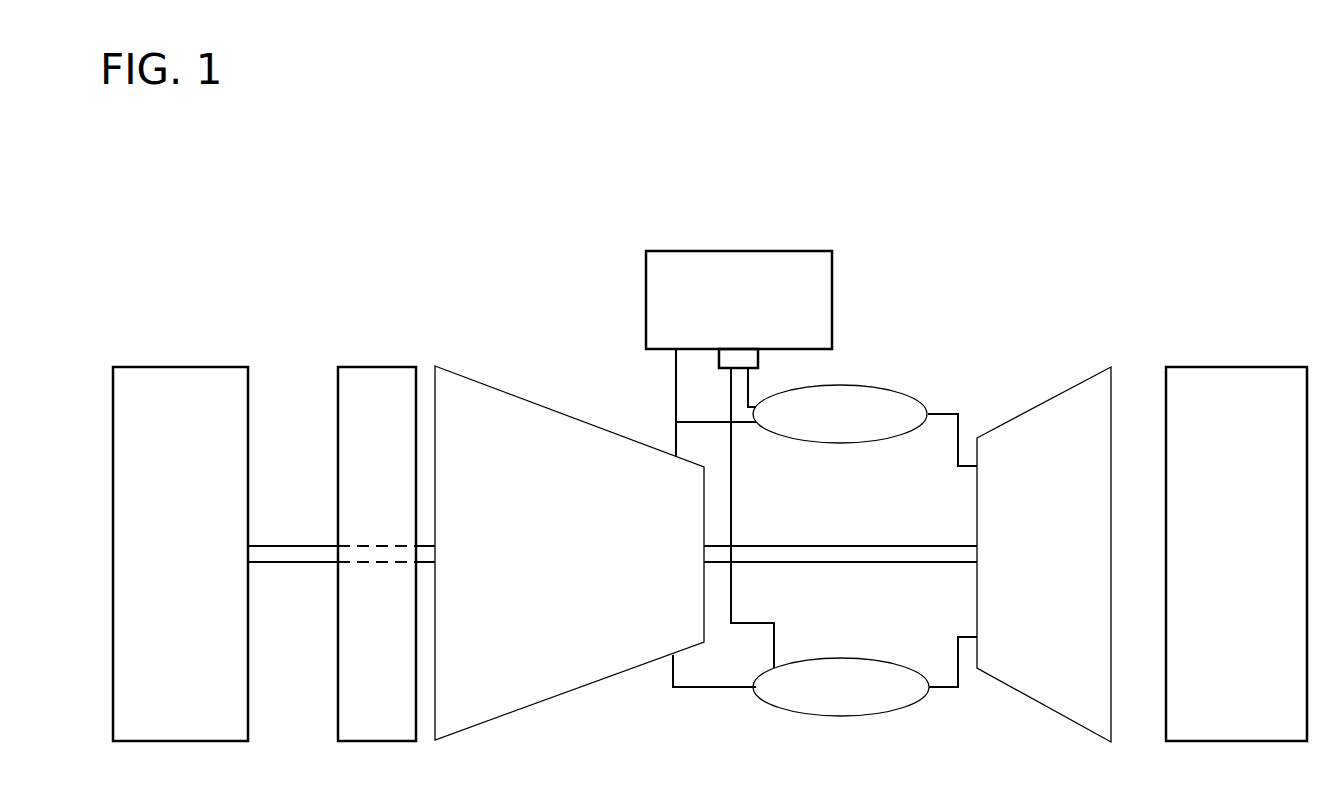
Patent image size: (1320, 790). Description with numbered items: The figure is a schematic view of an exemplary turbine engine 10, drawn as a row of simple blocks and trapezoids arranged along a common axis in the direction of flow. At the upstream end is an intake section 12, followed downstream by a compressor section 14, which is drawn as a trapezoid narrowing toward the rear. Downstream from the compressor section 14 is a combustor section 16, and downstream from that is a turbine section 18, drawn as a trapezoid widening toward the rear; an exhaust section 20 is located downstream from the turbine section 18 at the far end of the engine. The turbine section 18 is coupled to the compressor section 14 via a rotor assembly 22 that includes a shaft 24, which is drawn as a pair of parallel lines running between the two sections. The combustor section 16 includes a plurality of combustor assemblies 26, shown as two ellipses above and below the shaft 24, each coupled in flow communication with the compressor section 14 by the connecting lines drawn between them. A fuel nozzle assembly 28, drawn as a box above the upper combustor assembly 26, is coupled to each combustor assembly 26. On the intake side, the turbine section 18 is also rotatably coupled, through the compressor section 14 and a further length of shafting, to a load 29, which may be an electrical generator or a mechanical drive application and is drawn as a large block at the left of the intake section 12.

The turbine engine 10 is at (226, 224).
The intake section 12 is at (388, 367).
The compressor section 14 is at (553, 698).
The combustor section 16 is at (912, 367).
The turbine section 18 is at (1020, 419).
The exhaust section 20 is at (1215, 367).
The rotor assembly 22 is at (947, 577).
The shaft 24 is at (848, 545).
The combustor assembly 26 is at (840, 444).
The fuel nozzle assembly 28 is at (697, 251).
The load 29 is at (158, 367).